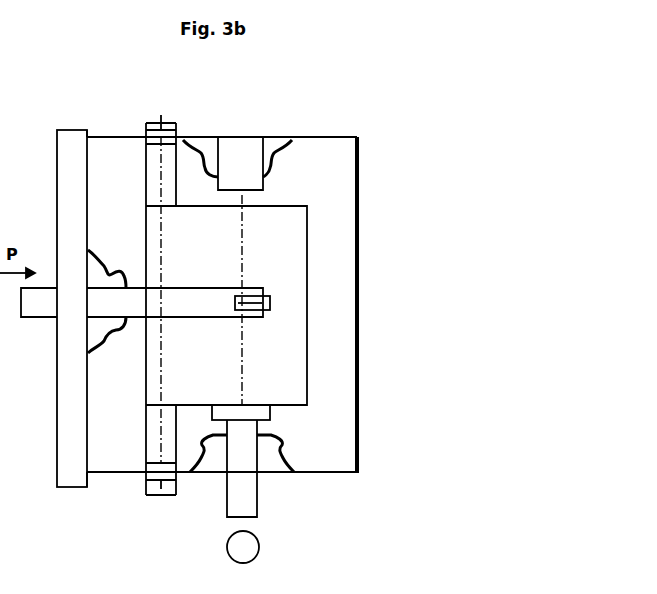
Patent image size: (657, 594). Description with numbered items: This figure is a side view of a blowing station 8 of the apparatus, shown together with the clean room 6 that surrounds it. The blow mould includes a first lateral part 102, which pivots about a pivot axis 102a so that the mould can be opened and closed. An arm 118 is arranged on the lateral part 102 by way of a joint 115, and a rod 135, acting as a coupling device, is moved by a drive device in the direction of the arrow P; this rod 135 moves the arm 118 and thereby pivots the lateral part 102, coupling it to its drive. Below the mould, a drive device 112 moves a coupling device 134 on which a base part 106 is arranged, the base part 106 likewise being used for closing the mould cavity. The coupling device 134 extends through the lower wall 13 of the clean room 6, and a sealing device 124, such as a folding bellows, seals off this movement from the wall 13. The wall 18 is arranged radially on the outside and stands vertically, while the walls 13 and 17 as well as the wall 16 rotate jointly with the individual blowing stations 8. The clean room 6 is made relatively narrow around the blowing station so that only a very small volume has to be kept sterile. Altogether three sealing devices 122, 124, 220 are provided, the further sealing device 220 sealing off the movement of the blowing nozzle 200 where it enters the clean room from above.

The clean room 6 is at (337, 333).
The blowing station 8 is at (333, 188).
The lower wall 13 is at (331, 472).
The wall 16 is at (67, 440).
The wall 17 is at (333, 136).
The wall 18 is at (359, 283).
The first lateral part 102 is at (288, 244).
The pivot axis 102a is at (153, 172).
The base part 106 is at (265, 413).
The drive device 112 is at (238, 552).
The joint 115 is at (270, 302).
The arm 118 is at (196, 305).
The sealing device 122 is at (118, 268).
The sealing device 124 is at (283, 453).
The coupling device 134 is at (248, 498).
The rod 135 is at (45, 305).
The blowing nozzle 200 is at (250, 150).
The sealing device 220 is at (283, 166).